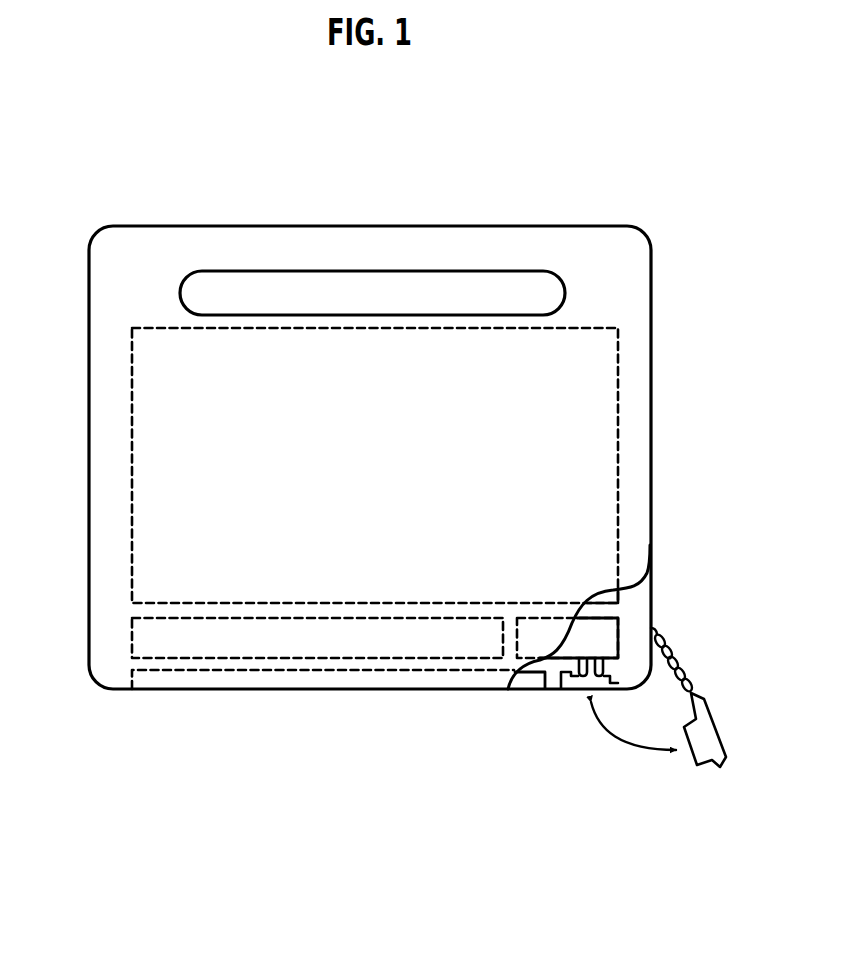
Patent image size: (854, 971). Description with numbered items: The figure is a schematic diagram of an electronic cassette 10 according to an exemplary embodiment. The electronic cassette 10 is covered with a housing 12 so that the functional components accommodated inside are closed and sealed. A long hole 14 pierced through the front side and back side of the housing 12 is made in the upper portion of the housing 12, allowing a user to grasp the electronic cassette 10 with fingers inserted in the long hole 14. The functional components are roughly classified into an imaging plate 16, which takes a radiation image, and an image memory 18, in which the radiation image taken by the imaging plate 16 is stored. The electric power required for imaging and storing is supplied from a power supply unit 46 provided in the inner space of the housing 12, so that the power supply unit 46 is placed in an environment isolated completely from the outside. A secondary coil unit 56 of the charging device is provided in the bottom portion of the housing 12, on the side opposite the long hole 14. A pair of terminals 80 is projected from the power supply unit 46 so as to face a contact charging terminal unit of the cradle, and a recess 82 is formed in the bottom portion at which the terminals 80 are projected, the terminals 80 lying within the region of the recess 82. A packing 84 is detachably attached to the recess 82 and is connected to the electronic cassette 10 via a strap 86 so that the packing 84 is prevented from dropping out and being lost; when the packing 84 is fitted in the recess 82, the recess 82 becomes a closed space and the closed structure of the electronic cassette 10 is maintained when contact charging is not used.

The electronic cassette 10 is at (686, 150).
The housing 12 is at (652, 292).
The long hole 14 is at (429, 270).
The imaging plate 16 is at (603, 410).
The image memory 18 is at (141, 637).
The power supply unit 46 is at (606, 636).
The secondary coil unit 56 is at (165, 679).
The pair of terminals 80 is at (600, 668).
The recess 82 is at (598, 678).
The packing 84 is at (706, 767).
The strap 86 is at (684, 675).